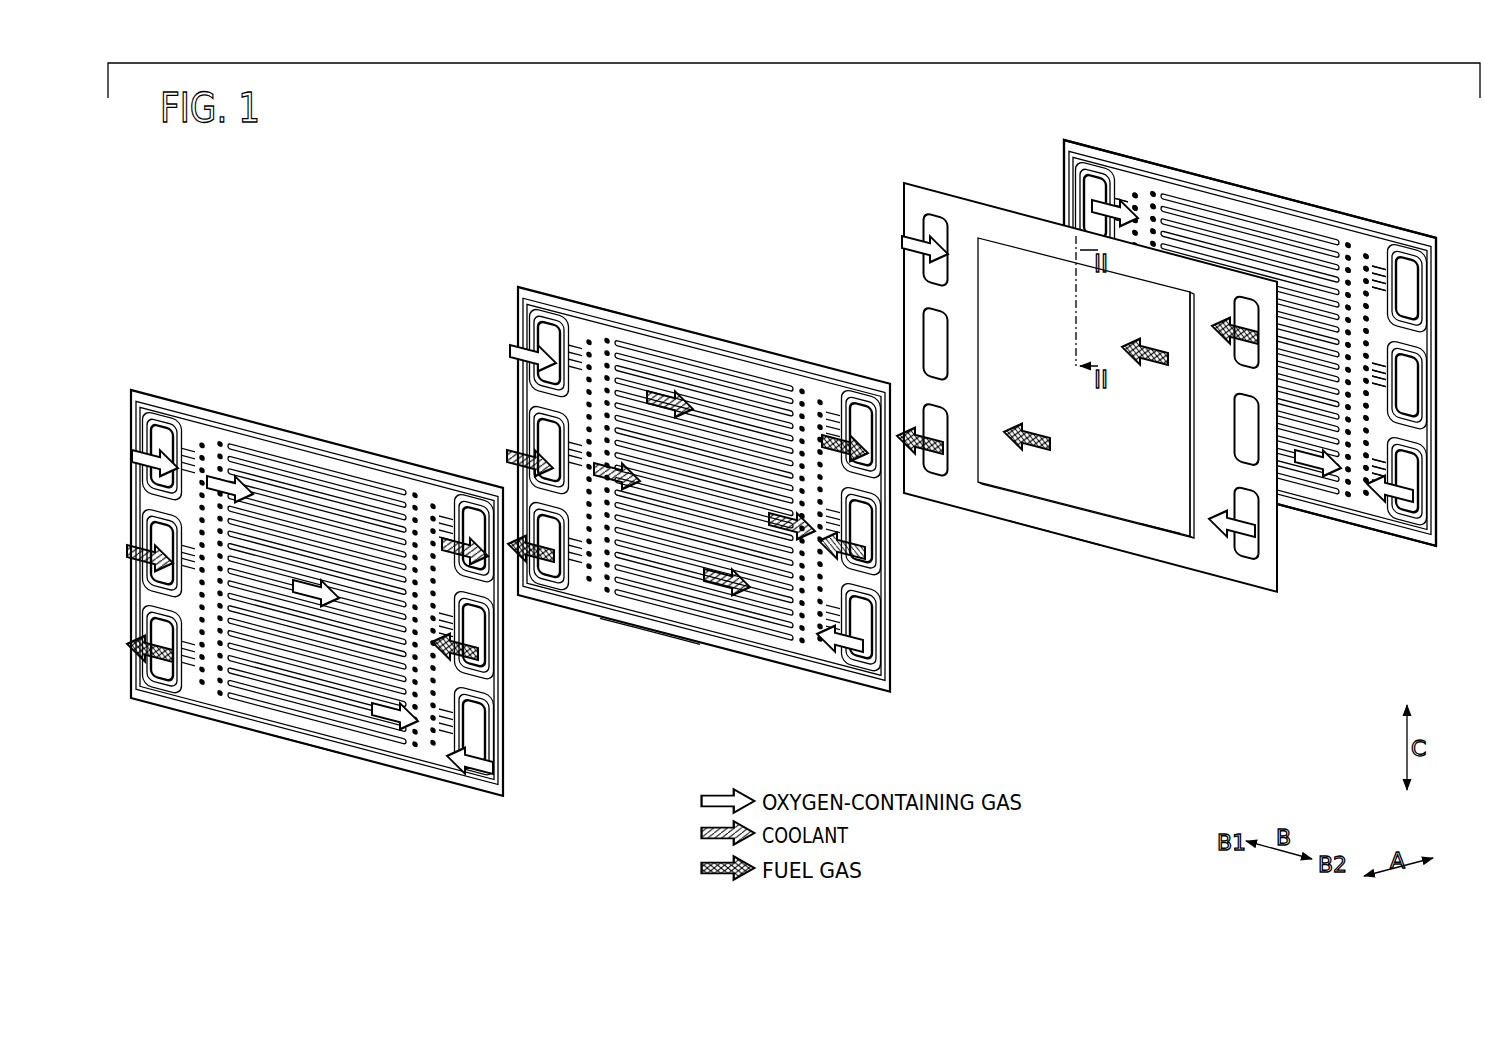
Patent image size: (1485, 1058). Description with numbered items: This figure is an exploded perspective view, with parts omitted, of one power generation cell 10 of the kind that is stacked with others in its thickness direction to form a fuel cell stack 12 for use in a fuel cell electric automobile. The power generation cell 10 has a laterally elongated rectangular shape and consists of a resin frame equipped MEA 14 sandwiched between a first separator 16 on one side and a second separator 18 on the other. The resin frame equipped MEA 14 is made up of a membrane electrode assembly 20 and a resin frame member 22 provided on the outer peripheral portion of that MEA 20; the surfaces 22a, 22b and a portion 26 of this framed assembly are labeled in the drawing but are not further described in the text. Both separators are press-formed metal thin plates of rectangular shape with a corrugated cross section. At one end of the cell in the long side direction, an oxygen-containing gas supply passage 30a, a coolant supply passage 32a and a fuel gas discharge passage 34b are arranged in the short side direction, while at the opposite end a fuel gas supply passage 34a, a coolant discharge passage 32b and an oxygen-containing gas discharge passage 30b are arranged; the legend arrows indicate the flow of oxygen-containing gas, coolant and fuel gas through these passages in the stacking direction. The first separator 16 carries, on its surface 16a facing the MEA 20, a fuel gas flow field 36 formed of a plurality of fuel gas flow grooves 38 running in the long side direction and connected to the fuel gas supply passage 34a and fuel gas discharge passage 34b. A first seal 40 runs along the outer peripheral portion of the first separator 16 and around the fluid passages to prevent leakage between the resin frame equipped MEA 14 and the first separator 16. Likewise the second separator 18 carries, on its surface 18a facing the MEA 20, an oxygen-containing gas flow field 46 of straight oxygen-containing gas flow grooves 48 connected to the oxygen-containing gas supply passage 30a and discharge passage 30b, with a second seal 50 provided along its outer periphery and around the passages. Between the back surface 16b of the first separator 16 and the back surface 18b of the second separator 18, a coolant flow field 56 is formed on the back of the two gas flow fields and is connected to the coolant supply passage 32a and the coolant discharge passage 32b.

The power generation cell 10 is at (775, 215).
The fuel cell stack 12 is at (441, 169).
The resin frame equipped MEA 14 is at (838, 167).
The first separator 16 is at (954, 395).
The surface of the first separator 16a is at (656, 622).
The surface of the first separator 16b is at (628, 620).
The second separator 18 is at (783, 470).
The surface of the second separator 18a is at (284, 740).
The surface of the second separator 18b is at (313, 750).
The membrane electrode assembly 20 is at (1016, 395).
The resin frame member 22 is at (1057, 399).
The surface of resin film 22a is at (1033, 528).
The surface of resin film 22b is at (1080, 540).
The electrode 26 is at (1160, 529).
The oxygen-containing gas supply passage 30a is at (162, 436).
The oxygen-containing gas discharge passage 30b is at (492, 732).
The coolant supply passage 32a is at (168, 573).
The coolant discharge passage 32b is at (478, 655).
The fuel gas supply passage 34a is at (470, 513).
The fuel gas discharge passage 34b is at (162, 668).
The fuel gas flow field 36 is at (704, 458).
The fuel gas flow grooves 38 is at (668, 365).
The first seal 40 is at (580, 308).
The oxygen-containing gas flow field 46 is at (783, 429).
The oxygen-containing gas flow grooves 48 is at (268, 463).
The second seal 50 is at (388, 748).
The coolant flow field 56 is at (714, 603).